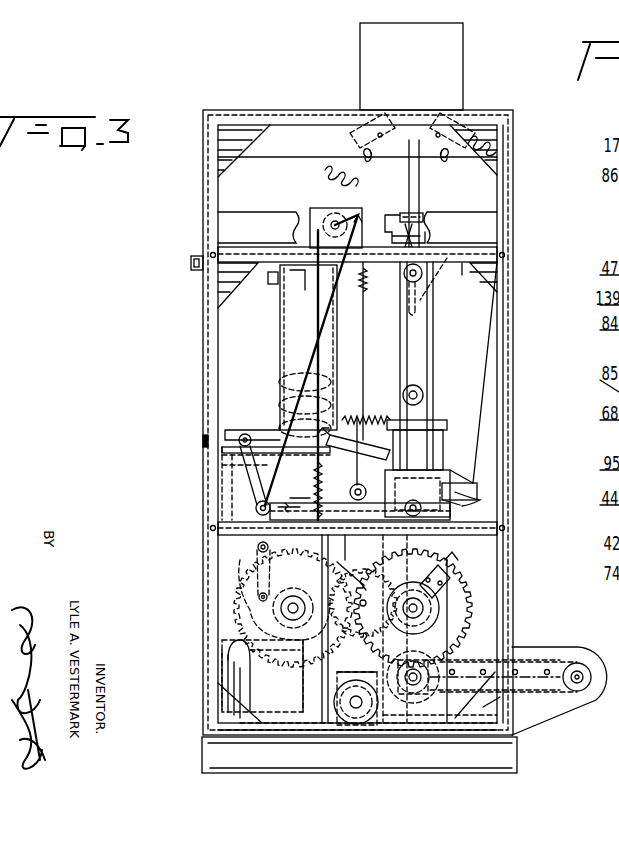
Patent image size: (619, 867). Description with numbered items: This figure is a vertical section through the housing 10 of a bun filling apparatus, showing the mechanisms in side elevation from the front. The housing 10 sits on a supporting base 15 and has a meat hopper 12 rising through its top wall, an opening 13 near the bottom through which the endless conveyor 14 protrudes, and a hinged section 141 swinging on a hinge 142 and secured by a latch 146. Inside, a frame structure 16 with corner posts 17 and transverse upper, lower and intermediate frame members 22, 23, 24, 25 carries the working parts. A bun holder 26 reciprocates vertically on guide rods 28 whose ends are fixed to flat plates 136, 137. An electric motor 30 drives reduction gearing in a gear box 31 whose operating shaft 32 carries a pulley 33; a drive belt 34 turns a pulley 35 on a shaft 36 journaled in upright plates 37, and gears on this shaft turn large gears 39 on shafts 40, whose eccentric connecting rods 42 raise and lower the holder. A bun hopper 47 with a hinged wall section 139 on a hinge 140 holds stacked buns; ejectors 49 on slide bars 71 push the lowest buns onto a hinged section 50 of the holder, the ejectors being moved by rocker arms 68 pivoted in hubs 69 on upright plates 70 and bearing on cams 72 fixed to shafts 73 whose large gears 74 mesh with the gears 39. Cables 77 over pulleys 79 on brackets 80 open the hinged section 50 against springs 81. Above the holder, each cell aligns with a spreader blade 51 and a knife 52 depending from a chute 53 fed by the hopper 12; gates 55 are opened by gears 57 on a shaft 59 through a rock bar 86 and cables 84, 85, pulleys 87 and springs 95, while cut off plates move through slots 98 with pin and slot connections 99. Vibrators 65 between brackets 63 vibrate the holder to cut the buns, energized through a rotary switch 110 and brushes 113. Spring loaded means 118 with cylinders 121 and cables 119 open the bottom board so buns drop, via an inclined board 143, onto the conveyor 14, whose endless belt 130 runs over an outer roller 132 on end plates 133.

The housing 10 is at (528, 158).
The hopper 12 is at (455, 55).
The opening 13 is at (591, 678).
The endless conveyor 14 is at (567, 638).
The supporting base 15 is at (206, 753).
The frame structure 16 is at (218, 386).
The corner posts 17 is at (505, 371).
The upper transverse frame member 22 is at (230, 122).
The lower transverse frame member 23 is at (492, 735).
The intermediate transverse frame member 24 is at (210, 258).
The intermediate transverse frame member 25 is at (228, 545).
The holder 26 is at (424, 430).
The guide rods 28 is at (434, 354).
The electric motor 30 is at (240, 670).
The gear box 31 is at (350, 706).
The operating shaft 32 is at (356, 714).
The pulley 33 is at (312, 735).
The drive belt 34 is at (393, 732).
The pulley 35 is at (415, 702).
The shaft 36 is at (420, 684).
The upright plates 37 is at (418, 682).
The large gears 39 is at (478, 606).
The shafts 40 is at (425, 612).
The connecting rods 42 is at (363, 605).
The hopper 47 is at (280, 337).
The ejectors 49 is at (243, 436).
The hinged section 50 is at (335, 432).
The spreader blade 51 is at (412, 328).
The knife 52 is at (421, 302).
The chutes 53 is at (413, 185).
The gates 55 is at (418, 232).
The gears 57 is at (328, 214).
The shaft 59 is at (335, 214).
The brackets 63 is at (445, 446).
The electrically driven vibrators 65 is at (421, 391).
The rocker arms 68 is at (243, 442).
The hubs 69 is at (232, 588).
The upright plates 70 is at (240, 601).
The slide bars 71 is at (262, 440).
The cams 72 is at (214, 651).
The shafts 73 is at (293, 612).
The large gears 74 is at (240, 620).
The cables 77 is at (365, 349).
The pulleys 79 is at (347, 525).
The brackets 80 is at (370, 435).
The springs 81 is at (357, 418).
The cables 84 is at (318, 352).
The cables 85 is at (320, 296).
The rock bar 86 is at (358, 215).
The pulleys 87 is at (258, 509).
The springs 95 is at (316, 480).
The slots 98 is at (422, 216).
The pin and slot connections 99 is at (398, 248).
The rotary switch 110 is at (422, 600).
The brushes 113 is at (418, 582).
The spring loaded means 118 is at (494, 510).
The cables 119 is at (480, 452).
The cylinders 121 is at (478, 491).
The endless belt 130 is at (572, 662).
The outer roller 132 is at (588, 698).
The end plates 133 is at (540, 712).
The flat plates 136 is at (447, 258).
The flat plates 137 is at (459, 545).
The section 139 is at (278, 323).
The hinge 140 is at (278, 413).
The section 141 is at (208, 360).
The hinge 142 is at (197, 444).
The inclined board 143 is at (337, 567).
The latch 146 is at (192, 266).